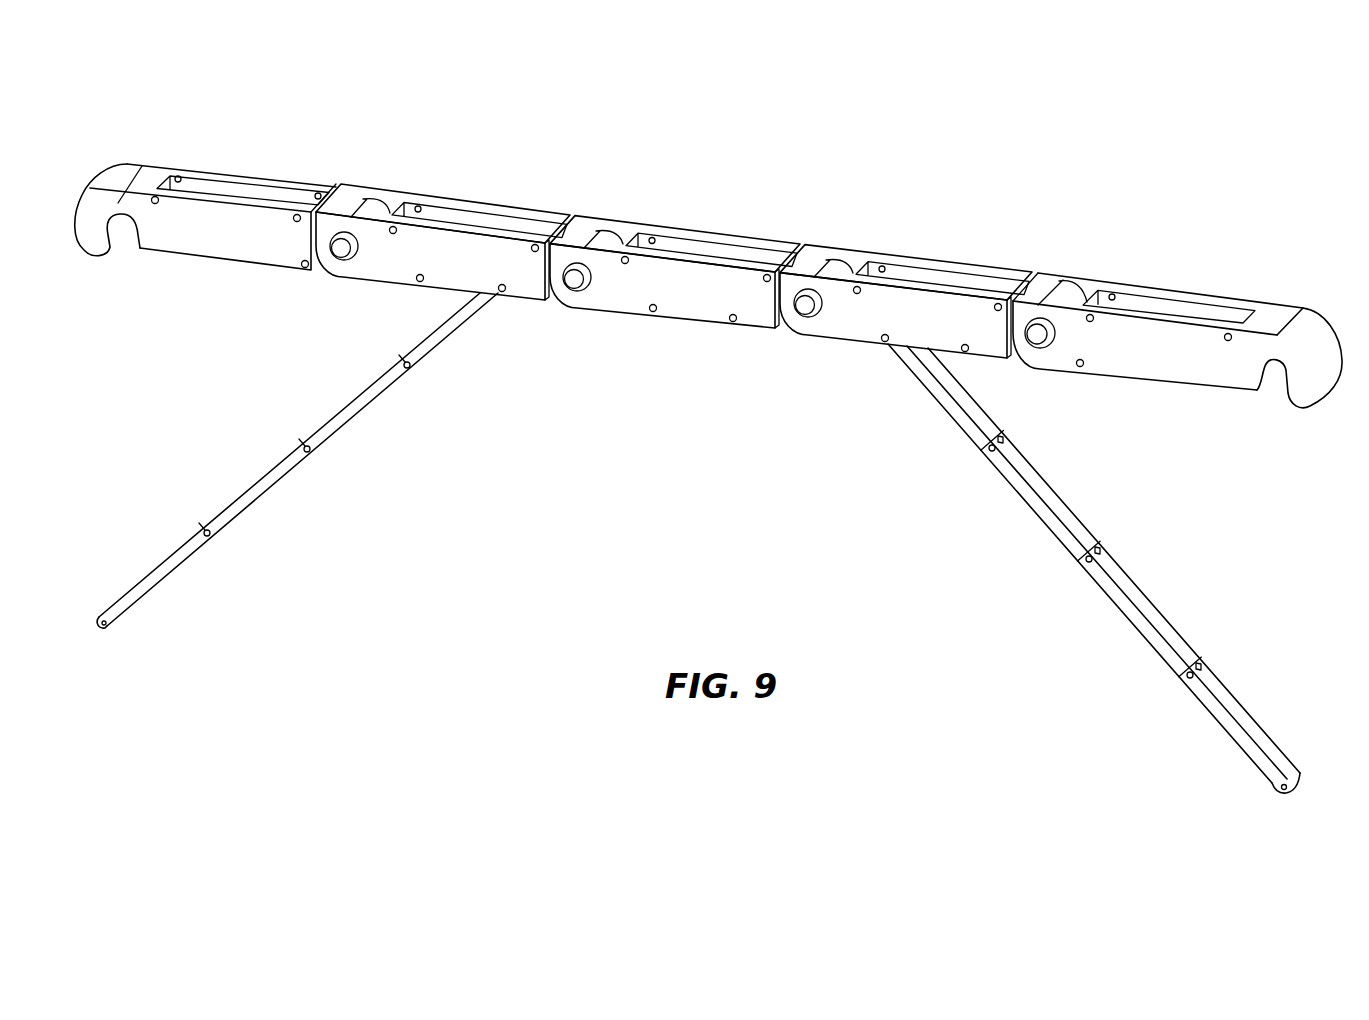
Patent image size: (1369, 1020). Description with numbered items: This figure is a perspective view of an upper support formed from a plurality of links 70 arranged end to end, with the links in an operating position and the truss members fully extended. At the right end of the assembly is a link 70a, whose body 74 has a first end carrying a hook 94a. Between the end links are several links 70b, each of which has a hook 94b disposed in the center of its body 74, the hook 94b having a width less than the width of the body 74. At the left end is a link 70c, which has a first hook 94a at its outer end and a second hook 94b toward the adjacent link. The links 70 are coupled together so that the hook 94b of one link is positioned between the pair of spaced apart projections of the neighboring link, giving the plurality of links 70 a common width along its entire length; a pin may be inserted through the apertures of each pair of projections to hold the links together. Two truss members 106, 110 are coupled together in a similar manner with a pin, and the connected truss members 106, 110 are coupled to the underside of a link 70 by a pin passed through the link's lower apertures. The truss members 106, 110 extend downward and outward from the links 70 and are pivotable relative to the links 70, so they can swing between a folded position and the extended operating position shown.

The links 70 is at (443, 100).
The link 70a is at (1170, 297).
The links 70b is at (468, 205).
The link 70c is at (153, 180).
The body 74 is at (230, 232).
The hook 94a is at (85, 238).
The hook 94b is at (348, 200).
The truss member 106 is at (177, 557).
The truss member 110 is at (470, 317).